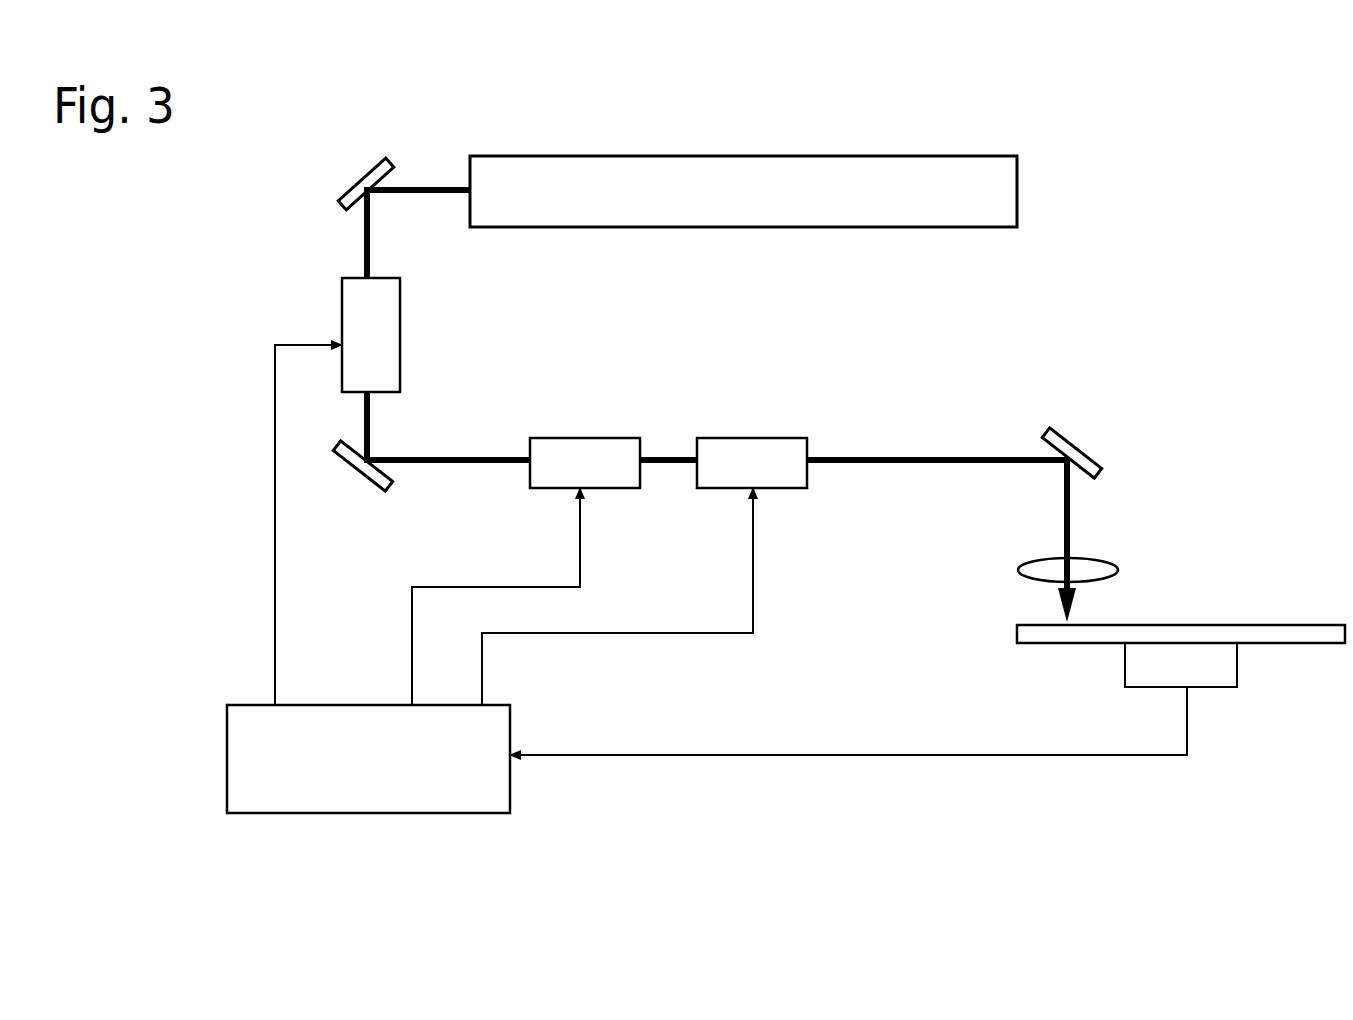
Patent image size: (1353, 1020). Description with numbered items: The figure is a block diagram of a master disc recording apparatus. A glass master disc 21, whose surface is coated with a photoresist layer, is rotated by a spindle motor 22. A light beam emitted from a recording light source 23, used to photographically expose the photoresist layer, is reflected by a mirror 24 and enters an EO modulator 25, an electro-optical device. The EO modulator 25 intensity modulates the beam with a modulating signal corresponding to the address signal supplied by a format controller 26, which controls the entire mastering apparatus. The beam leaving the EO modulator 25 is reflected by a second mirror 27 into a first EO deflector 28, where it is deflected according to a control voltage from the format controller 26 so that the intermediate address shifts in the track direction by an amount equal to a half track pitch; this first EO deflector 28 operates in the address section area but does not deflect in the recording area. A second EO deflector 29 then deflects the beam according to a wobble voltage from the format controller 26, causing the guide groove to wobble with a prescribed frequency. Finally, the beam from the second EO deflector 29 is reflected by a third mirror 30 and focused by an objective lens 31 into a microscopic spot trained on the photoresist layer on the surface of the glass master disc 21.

The glass master disc 21 is at (1262, 625).
The spindle motor 22 is at (1202, 685).
The recording light source 23 is at (900, 153).
The mirror 24 is at (372, 172).
The EO modulator 25 is at (402, 320).
The format controller 26 is at (458, 813).
The second mirror 27 is at (343, 458).
The first EO deflector 28 is at (623, 437).
The second EO deflector 29 is at (767, 435).
The third mirror 30 is at (1062, 432).
The objective lens 31 is at (1117, 563).